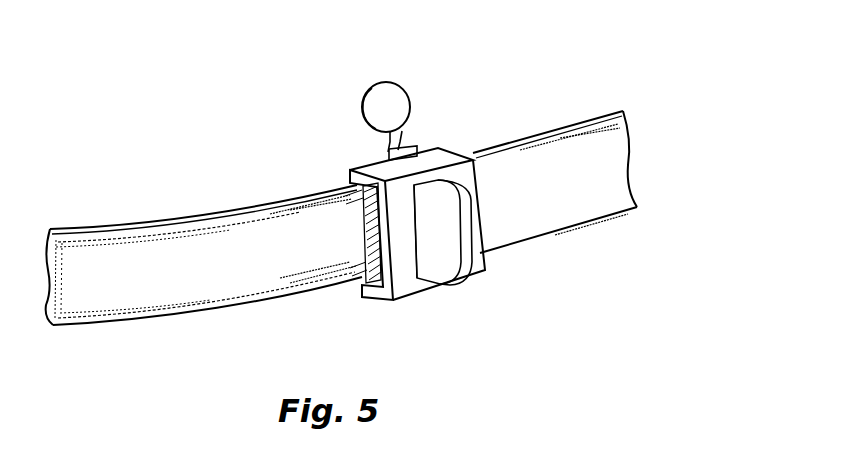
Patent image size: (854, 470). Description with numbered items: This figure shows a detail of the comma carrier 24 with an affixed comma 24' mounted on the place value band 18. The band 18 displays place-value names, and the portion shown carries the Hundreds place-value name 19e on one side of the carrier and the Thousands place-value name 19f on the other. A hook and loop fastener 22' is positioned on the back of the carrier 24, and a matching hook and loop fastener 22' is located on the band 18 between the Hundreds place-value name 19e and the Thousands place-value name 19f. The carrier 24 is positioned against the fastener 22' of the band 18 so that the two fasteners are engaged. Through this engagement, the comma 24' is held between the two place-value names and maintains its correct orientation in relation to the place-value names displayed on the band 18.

The place value band 18 is at (127, 297).
The Thousands place-value name 19f is at (262, 268).
The Hundreds place-value name 19e is at (541, 207).
The hook and loop fastener 22' is at (329, 208).
The comma carrier 24 is at (417, 253).
The comma 24' is at (404, 87).